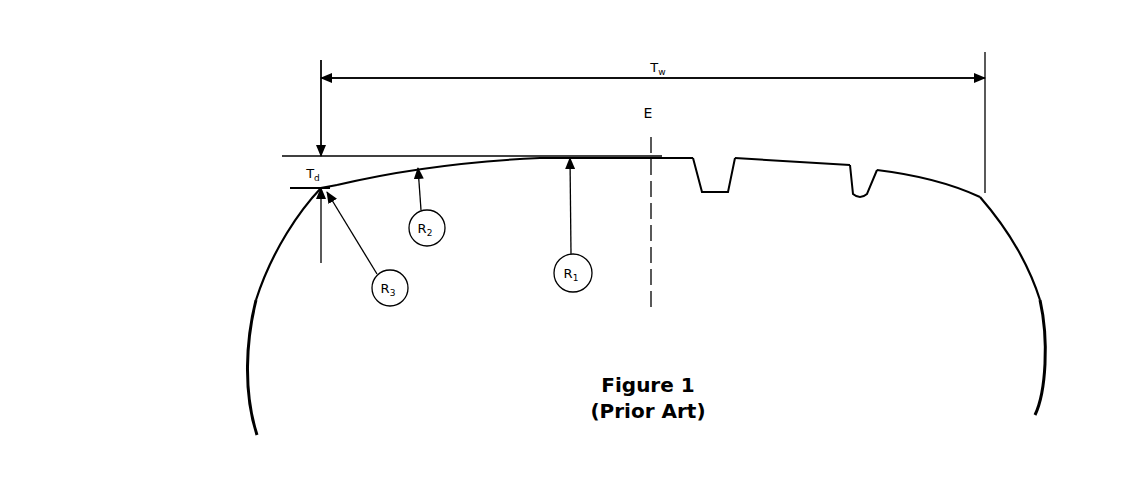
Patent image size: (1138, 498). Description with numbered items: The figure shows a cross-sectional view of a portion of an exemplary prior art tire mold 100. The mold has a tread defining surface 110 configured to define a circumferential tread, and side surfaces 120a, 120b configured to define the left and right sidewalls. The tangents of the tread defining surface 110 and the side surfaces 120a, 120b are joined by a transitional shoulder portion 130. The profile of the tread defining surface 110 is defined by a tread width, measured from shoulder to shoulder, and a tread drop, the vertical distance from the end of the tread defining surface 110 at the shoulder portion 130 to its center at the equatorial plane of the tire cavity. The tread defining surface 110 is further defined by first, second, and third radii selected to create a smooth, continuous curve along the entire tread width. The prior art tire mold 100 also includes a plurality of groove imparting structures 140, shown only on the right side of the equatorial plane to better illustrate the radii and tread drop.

The prior art tire mold 100 is at (1042, 127).
The tread defining surface 110 is at (612, 157).
The side surface 120a is at (243, 332).
The side surface 120b is at (1047, 322).
The transitional shoulder portion 130 is at (290, 226).
The groove imparting structures 140 is at (722, 163).